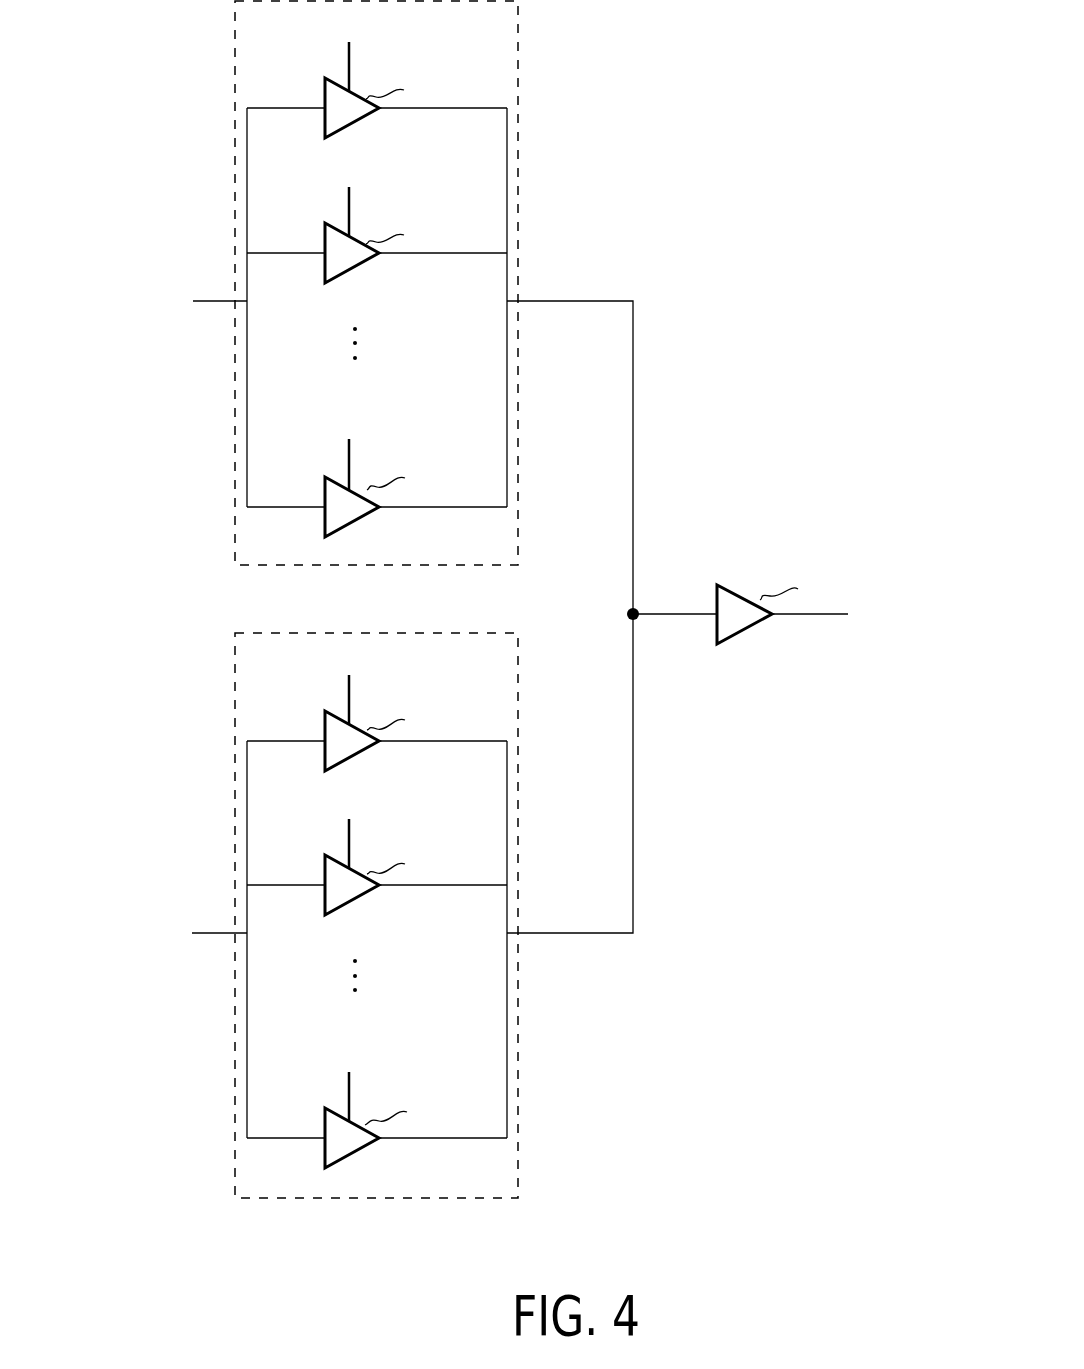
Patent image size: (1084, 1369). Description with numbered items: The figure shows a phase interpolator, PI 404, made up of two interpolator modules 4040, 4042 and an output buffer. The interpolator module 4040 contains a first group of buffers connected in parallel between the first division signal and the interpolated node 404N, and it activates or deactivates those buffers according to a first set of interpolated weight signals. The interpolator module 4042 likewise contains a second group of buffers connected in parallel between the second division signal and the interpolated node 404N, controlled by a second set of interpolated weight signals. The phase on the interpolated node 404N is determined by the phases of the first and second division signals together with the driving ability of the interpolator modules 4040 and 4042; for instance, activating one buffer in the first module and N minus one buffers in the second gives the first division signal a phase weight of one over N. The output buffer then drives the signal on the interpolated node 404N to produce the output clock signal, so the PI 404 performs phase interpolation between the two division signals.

The phase interpolator 404 is at (762, 113).
The interpolator module 4040 is at (517, 58).
The interpolator module 4042 is at (518, 692).
The interpolated node 404N is at (636, 618).